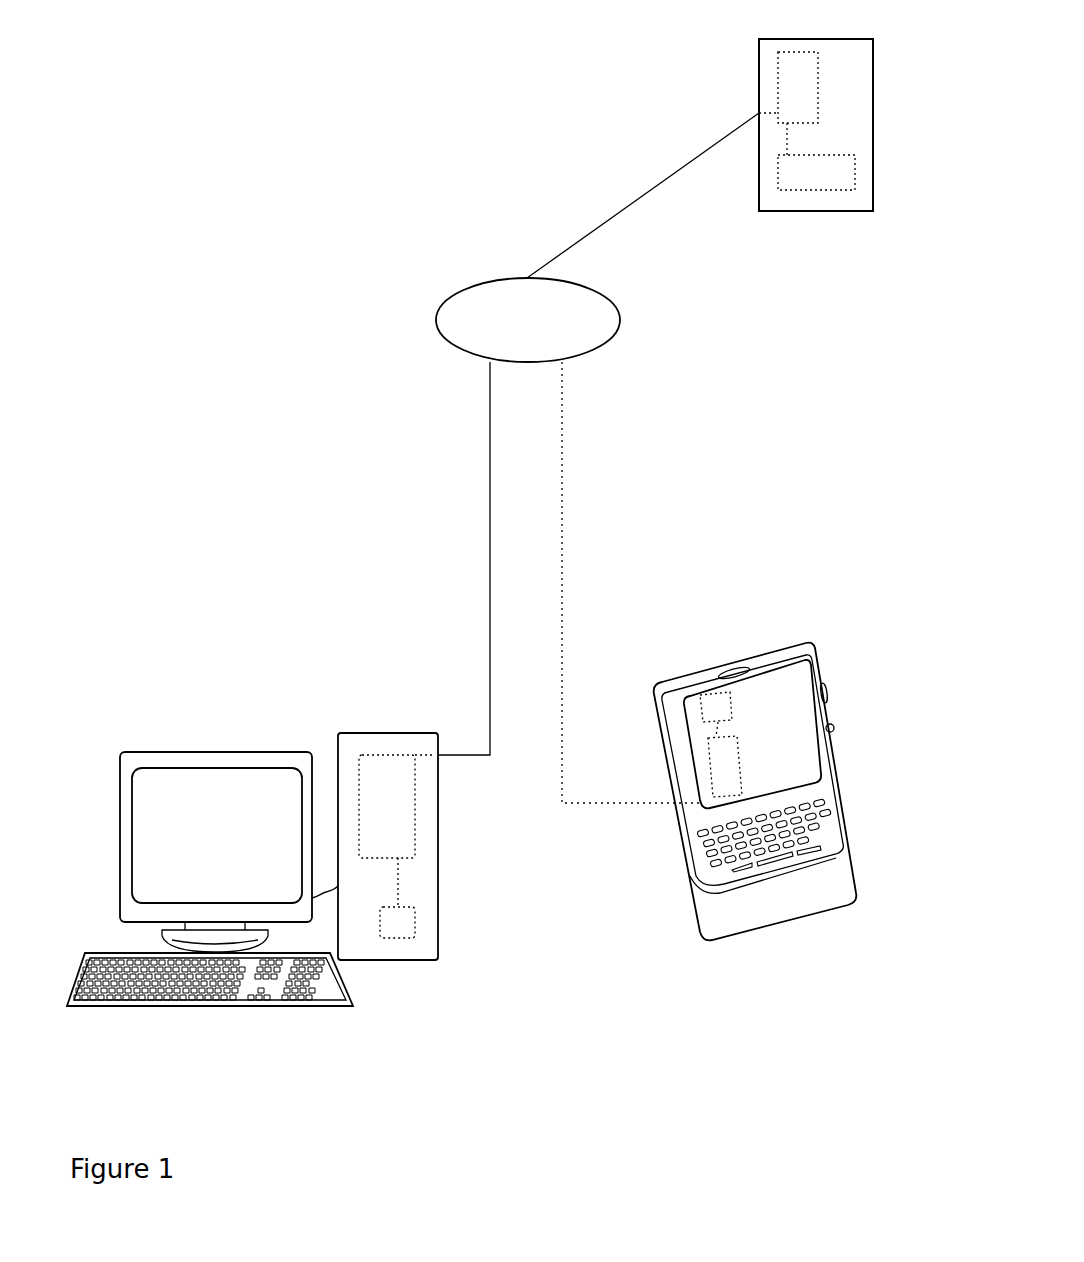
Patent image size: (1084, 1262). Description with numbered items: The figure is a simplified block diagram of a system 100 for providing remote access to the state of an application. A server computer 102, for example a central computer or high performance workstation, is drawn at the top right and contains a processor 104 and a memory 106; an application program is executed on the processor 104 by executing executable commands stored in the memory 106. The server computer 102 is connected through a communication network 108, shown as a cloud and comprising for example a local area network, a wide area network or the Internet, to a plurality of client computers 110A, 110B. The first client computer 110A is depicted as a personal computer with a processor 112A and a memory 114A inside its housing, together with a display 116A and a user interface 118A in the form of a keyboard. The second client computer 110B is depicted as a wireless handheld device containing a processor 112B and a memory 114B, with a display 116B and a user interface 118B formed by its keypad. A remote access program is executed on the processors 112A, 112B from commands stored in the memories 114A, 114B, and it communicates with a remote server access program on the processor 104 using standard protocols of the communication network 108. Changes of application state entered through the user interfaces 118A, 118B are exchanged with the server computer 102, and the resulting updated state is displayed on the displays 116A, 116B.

The system 100 is at (231, 144).
The server computer 102 is at (848, 97).
The processor 104 is at (778, 80).
The memory 106 is at (855, 175).
The communication network 108 is at (490, 298).
The client computer 110A is at (388, 733).
The processor 112A is at (363, 770).
The memory 114A is at (398, 925).
The display 116A is at (146, 806).
The user interface 118A is at (297, 1007).
The client computer 110B is at (683, 670).
The processor 112B is at (745, 778).
The memory 114B is at (732, 712).
The display 116B is at (783, 692).
The user interface 118B is at (833, 807).